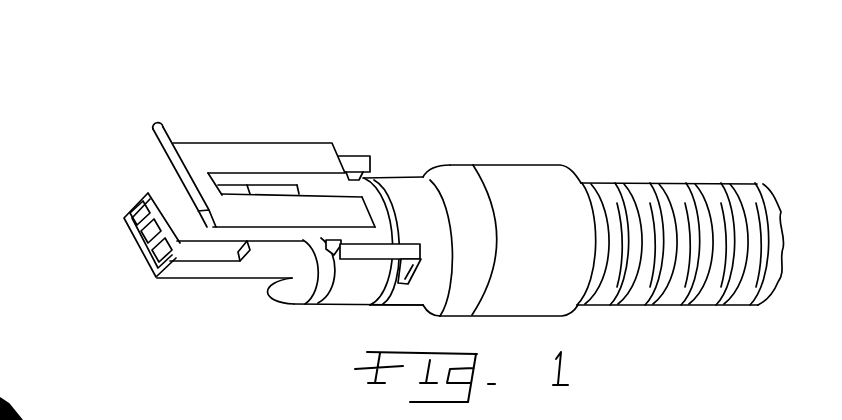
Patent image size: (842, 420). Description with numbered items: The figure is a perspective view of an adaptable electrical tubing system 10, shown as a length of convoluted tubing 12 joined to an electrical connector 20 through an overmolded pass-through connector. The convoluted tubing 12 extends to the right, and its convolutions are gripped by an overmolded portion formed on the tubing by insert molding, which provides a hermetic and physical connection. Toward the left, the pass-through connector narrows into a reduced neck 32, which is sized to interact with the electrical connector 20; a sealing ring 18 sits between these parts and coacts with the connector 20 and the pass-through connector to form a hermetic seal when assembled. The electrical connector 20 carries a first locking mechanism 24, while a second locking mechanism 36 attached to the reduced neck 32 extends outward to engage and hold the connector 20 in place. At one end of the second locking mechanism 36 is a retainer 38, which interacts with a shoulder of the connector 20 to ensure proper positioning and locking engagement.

The adaptable electrical tubing system 10 is at (695, 78).
The convoluted tubing 12 is at (703, 183).
The sealing ring 18 is at (388, 288).
The electrical connector 20 is at (292, 304).
The first locking mechanism 24 is at (255, 143).
The reduced neck 32 is at (396, 178).
The second locking mechanism 36 is at (348, 155).
The retainer 38 is at (514, 164).